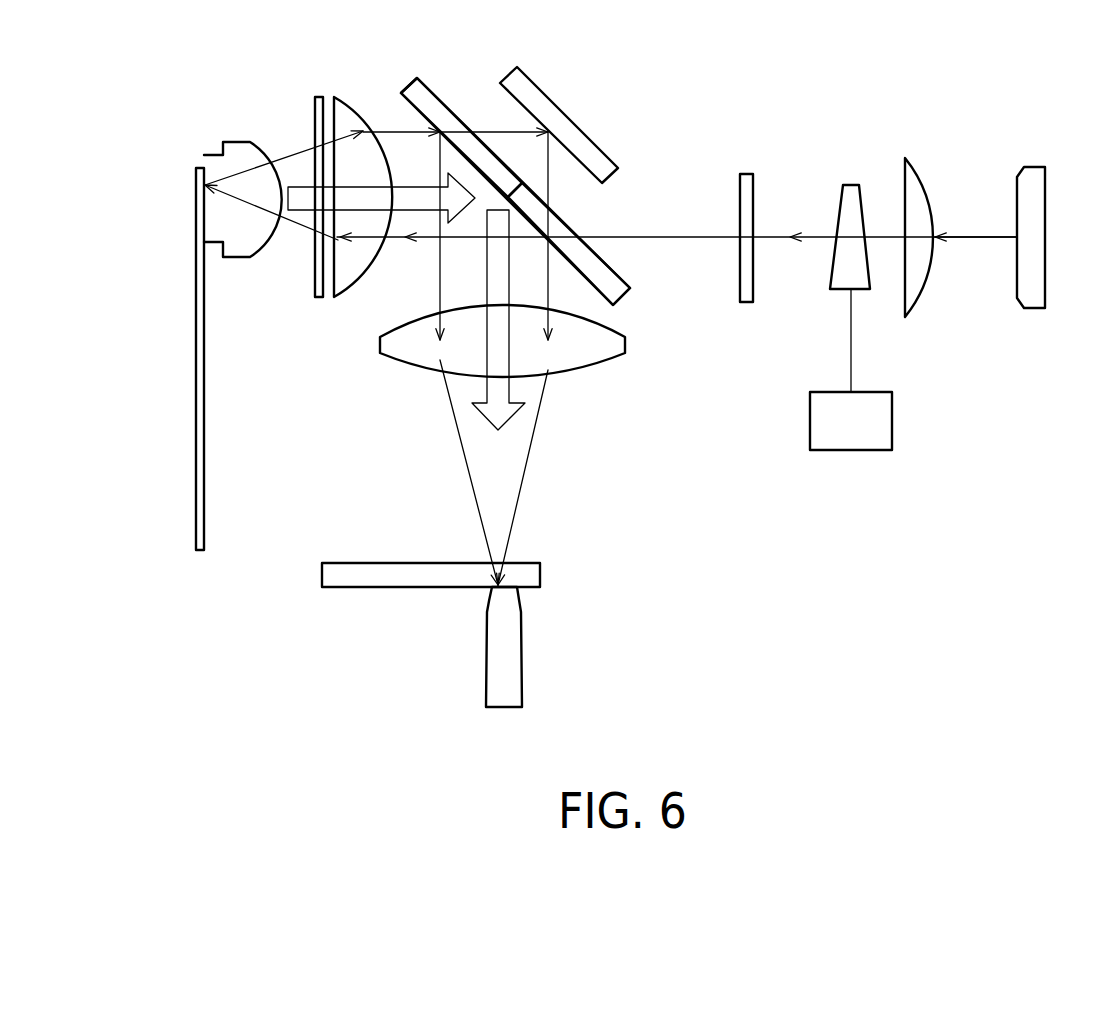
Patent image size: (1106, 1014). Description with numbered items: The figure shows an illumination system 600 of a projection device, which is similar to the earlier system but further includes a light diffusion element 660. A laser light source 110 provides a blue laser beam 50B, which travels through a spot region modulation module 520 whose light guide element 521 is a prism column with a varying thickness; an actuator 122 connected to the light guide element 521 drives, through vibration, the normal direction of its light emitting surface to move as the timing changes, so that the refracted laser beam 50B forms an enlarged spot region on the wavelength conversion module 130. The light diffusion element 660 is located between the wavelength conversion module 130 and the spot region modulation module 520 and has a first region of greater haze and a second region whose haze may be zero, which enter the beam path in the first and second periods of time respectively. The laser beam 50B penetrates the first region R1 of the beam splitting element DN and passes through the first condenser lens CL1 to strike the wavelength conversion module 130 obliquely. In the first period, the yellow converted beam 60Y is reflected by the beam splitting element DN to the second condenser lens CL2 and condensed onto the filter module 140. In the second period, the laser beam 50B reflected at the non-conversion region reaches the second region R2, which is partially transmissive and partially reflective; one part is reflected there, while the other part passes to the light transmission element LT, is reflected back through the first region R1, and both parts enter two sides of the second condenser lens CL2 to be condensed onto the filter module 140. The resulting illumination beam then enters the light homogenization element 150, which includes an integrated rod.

The laser light source 110 is at (1045, 207).
The actuator 122 is at (892, 422).
The wavelength conversion module 130 is at (196, 380).
The filter module 140 is at (322, 578).
The light homogenization element 150 is at (522, 652).
The spot region modulation module 520 is at (882, 158).
The light guide element 521 is at (851, 185).
The light diffusion element 660 is at (746, 172).
The illumination system 600 is at (1052, 716).
The first condenser lens CL1 is at (347, 117).
The second condenser lens CL2 is at (587, 355).
The beam splitting element DN is at (633, 306).
The first region R1 is at (605, 272).
The second region R2 is at (432, 108).
The light transmission element LT is at (532, 93).
The laser beam 50B is at (475, 507).
The converted beam 60Y is at (412, 190).